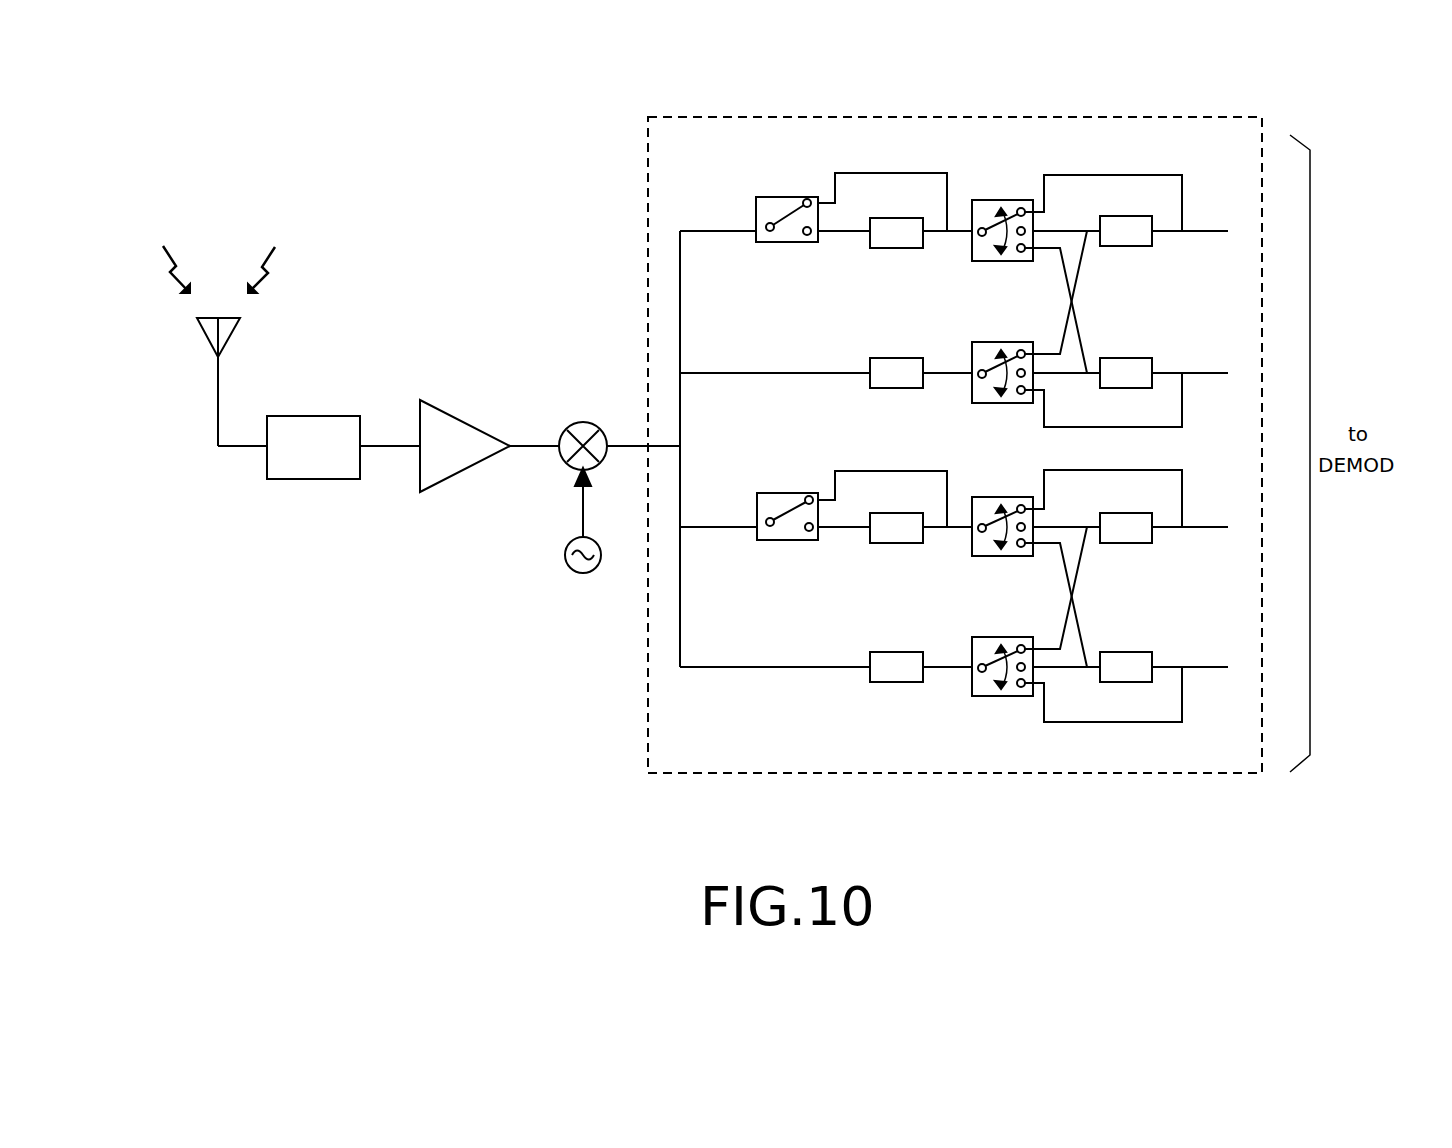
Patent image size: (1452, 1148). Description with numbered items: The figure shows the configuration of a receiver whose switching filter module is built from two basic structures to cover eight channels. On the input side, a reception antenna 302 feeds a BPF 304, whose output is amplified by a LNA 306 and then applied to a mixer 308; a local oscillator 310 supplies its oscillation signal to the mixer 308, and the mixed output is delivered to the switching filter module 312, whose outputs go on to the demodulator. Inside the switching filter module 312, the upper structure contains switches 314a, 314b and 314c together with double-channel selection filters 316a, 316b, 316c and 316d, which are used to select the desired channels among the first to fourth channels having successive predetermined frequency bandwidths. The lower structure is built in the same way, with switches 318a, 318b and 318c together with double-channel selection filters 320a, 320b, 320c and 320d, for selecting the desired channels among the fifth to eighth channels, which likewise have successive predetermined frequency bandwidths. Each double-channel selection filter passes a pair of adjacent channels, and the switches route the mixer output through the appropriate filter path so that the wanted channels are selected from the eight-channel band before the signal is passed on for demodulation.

The reception antenna 302 is at (242, 296).
The BPF 304 is at (305, 415).
The LNA 306 is at (465, 418).
The mixer 308 is at (580, 422).
The local oscillator 310 is at (583, 574).
The switching filter module 312 is at (925, 115).
The switch 314a is at (790, 197).
The switch 314b is at (992, 200).
The switch 314c is at (992, 342).
The double-channel selection filter 316a is at (878, 218).
The double-channel selection filter 316b is at (892, 358).
The double-channel selection filter 316c is at (1105, 216).
The double-channel selection filter 316d is at (1118, 358).
The switch 318a is at (803, 476).
The switch 318b is at (1012, 478).
The switch 318c is at (992, 637).
The double-channel selection filter 320a is at (878, 513).
The double-channel selection filter 320b is at (892, 652).
The double-channel selection filter 320c is at (1105, 513).
The double-channel selection filter 320d is at (1118, 652).